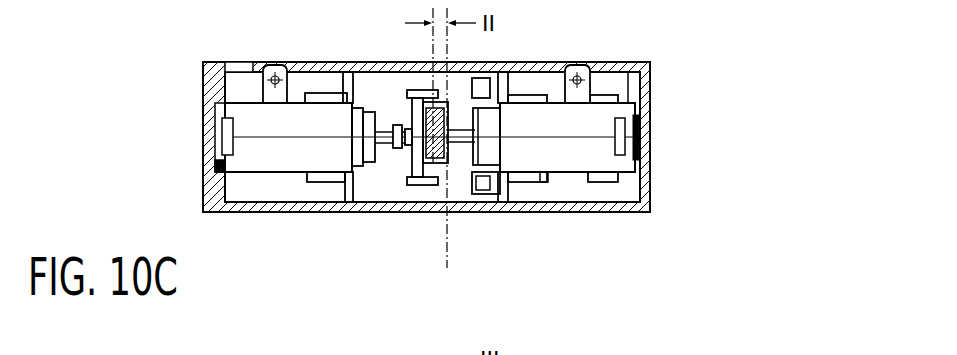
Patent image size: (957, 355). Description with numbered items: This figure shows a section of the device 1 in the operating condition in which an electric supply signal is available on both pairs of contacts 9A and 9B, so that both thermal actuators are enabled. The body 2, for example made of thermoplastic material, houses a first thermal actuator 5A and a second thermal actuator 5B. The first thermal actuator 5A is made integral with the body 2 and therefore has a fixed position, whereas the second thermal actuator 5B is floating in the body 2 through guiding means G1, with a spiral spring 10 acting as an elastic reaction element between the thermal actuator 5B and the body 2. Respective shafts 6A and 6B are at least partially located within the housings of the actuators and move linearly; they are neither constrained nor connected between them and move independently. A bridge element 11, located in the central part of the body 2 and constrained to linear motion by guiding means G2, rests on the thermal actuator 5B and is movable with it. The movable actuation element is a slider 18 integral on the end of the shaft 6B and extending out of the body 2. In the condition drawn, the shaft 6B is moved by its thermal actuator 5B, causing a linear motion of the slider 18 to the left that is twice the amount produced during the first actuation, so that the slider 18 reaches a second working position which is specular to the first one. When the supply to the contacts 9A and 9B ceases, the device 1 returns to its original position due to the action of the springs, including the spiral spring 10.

The device 1 is at (668, 147).
The body 2 is at (646, 77).
The first thermal actuator 5A is at (245, 171).
The second thermal actuator 5B is at (572, 176).
The shaft 6A is at (383, 138).
The shaft 6B is at (462, 144).
The contacts 9A is at (275, 63).
The contacts 9B is at (575, 65).
The spiral spring 10 is at (650, 173).
The bridge element 11 is at (415, 162).
The slider 18 is at (433, 106).
The guiding means G1 is at (522, 97).
The guiding means G2 is at (425, 185).